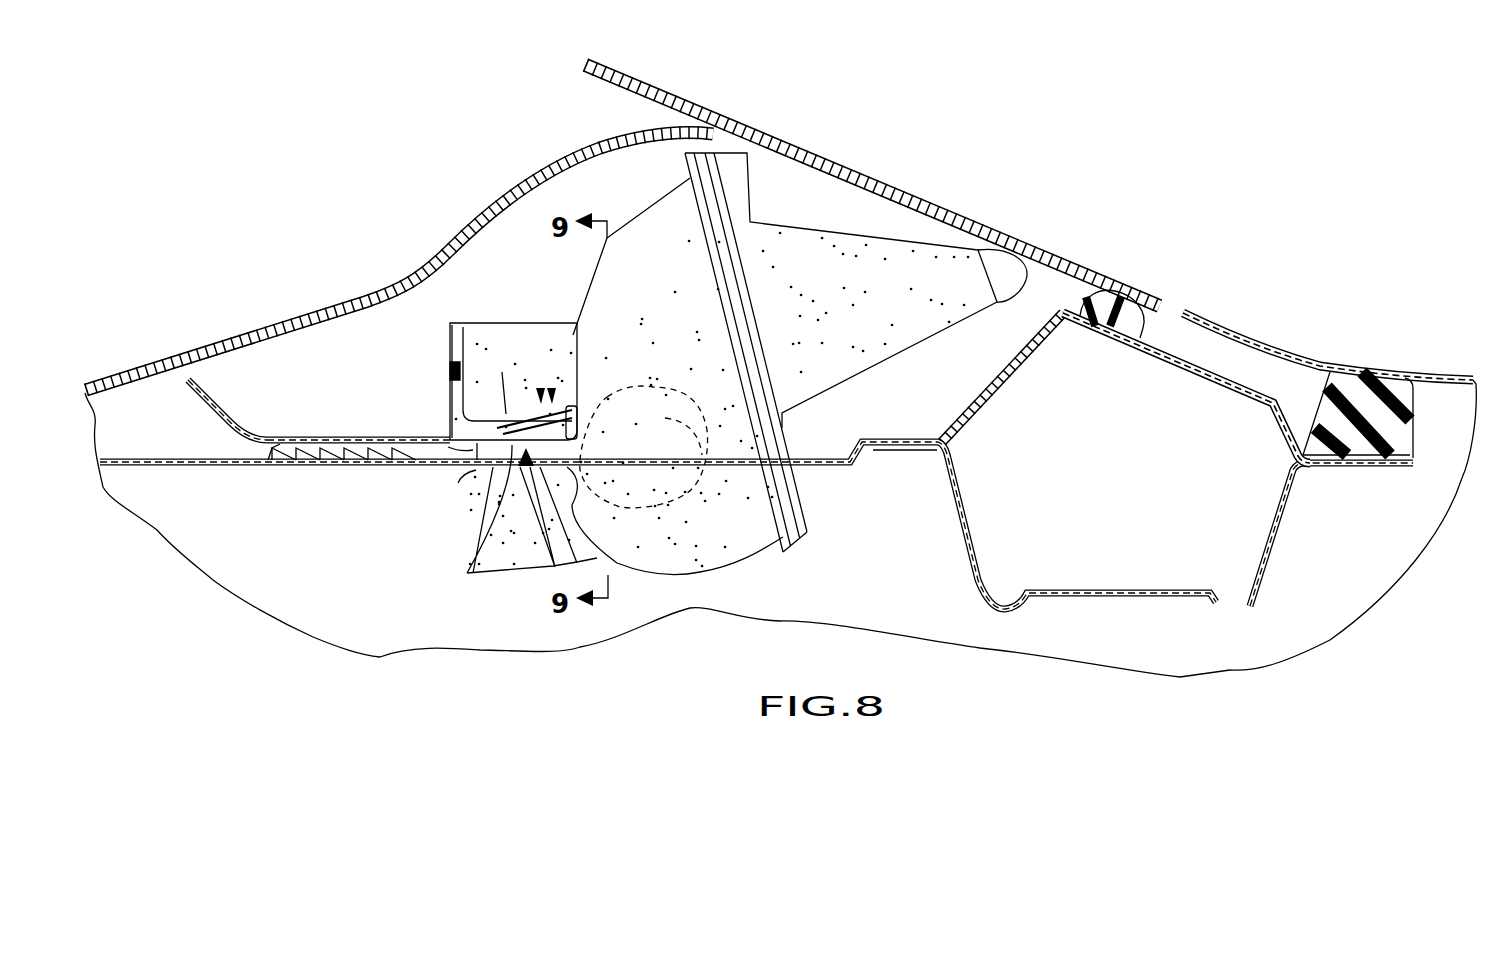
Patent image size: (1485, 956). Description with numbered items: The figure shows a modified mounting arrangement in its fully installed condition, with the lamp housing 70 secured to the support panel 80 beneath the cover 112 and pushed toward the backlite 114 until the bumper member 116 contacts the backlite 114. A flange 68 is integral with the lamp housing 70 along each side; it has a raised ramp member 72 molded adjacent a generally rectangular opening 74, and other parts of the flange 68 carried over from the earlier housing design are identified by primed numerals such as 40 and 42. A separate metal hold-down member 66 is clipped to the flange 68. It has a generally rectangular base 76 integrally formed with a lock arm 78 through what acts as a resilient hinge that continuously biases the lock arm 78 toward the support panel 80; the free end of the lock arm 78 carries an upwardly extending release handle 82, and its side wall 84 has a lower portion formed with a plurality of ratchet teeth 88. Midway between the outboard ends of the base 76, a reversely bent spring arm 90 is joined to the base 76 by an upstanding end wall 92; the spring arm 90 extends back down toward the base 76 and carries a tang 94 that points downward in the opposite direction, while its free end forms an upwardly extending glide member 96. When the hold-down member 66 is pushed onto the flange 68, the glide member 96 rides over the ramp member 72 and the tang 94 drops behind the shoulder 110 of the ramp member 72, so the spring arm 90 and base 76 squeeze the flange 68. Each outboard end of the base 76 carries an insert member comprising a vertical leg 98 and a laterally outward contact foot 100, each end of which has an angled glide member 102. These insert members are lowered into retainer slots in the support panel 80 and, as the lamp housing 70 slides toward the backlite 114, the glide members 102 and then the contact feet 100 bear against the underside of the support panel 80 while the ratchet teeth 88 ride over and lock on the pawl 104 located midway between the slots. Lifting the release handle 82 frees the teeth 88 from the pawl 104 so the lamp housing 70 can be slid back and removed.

The hinge panel 40 is at (576, 341).
The channel member 42 is at (460, 390).
The hold-down member 66 is at (540, 398).
The flange 68 is at (450, 366).
The lamp housing 70 is at (670, 250).
The ramp member 72 is at (569, 410).
The rectangular opening 74 is at (470, 428).
The base 76 is at (518, 468).
The lock arm 78 is at (361, 424).
The support panel 80 is at (168, 458).
The release handle 82 is at (227, 412).
The side wall 84 is at (272, 458).
The ratchet teeth 88 is at (333, 466).
The spring arm 90 is at (551, 392).
The end wall 92 is at (609, 397).
The tang 94 is at (499, 379).
The glide member 96 is at (451, 365).
The leg 98 is at (478, 450).
The contact foot 100 is at (423, 465).
The glide member 102 is at (502, 470).
The pawl 104 is at (411, 464).
The shoulder 110 is at (487, 467).
The cover 112 is at (370, 300).
The backlite 114 is at (858, 176).
The bumper member 116 is at (1012, 268).